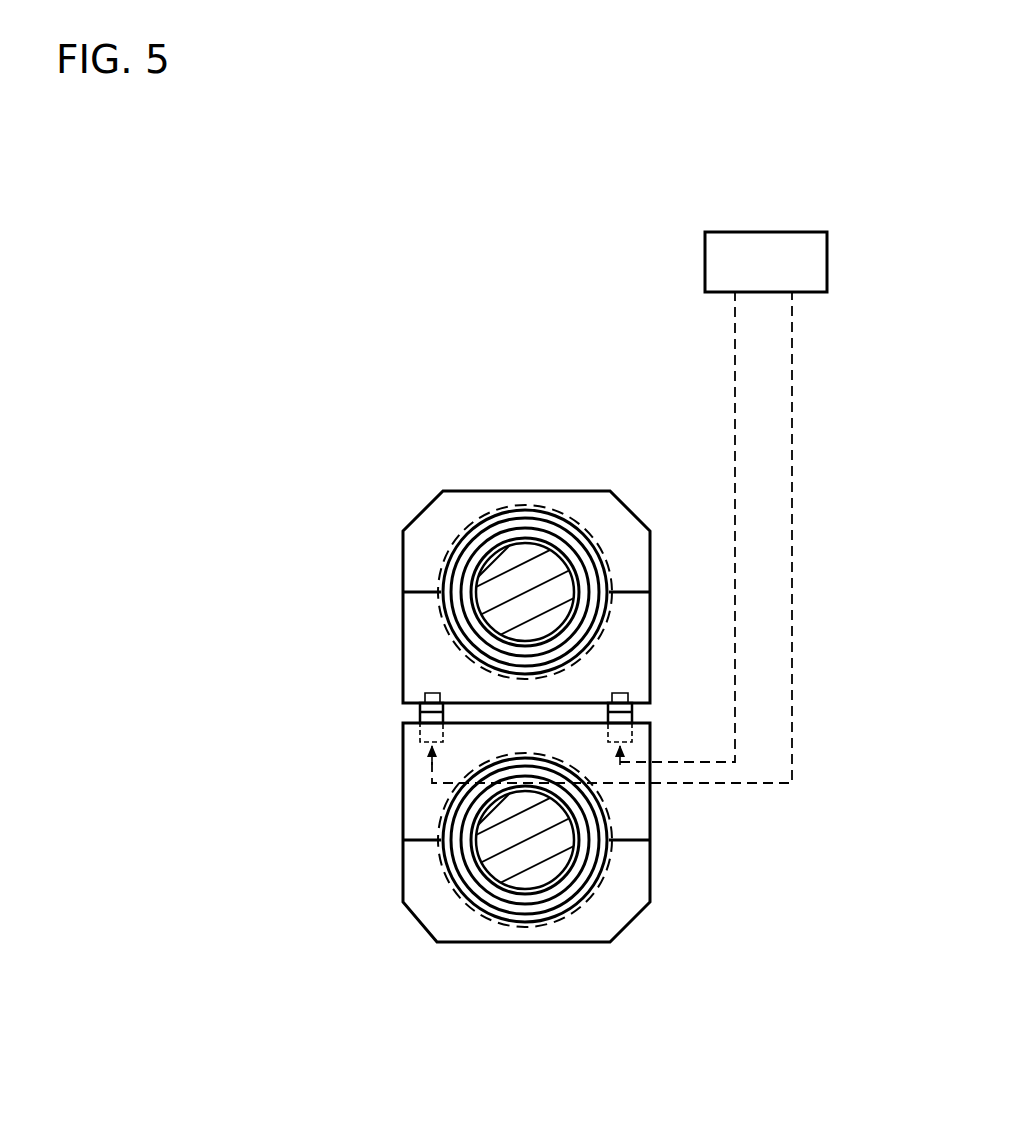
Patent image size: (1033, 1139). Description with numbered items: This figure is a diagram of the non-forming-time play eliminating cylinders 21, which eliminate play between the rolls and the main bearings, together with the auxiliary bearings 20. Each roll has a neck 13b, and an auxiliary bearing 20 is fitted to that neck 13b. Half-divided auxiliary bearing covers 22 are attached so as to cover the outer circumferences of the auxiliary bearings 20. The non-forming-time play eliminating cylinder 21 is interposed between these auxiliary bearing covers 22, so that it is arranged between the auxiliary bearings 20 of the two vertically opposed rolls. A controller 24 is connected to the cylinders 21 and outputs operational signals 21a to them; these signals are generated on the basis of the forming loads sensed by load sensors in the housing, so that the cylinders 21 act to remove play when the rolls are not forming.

The auxiliary bearing 20 is at (522, 506).
The neck 13b is at (497, 556).
The auxiliary bearing cover 22 is at (417, 630).
The non-forming-time play eliminating cylinder 21 is at (416, 732).
The operational signal 21a is at (735, 535).
The controller 24 is at (765, 232).